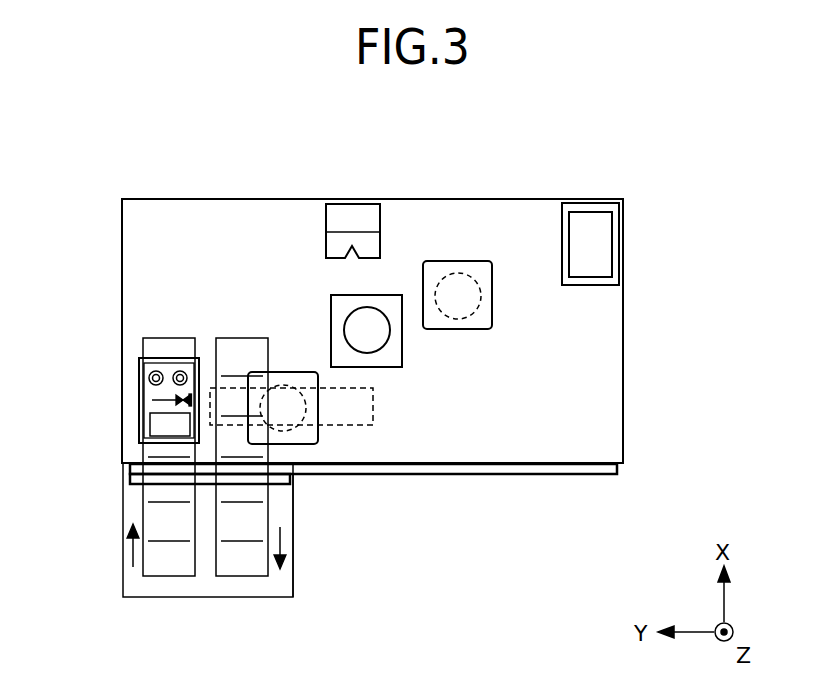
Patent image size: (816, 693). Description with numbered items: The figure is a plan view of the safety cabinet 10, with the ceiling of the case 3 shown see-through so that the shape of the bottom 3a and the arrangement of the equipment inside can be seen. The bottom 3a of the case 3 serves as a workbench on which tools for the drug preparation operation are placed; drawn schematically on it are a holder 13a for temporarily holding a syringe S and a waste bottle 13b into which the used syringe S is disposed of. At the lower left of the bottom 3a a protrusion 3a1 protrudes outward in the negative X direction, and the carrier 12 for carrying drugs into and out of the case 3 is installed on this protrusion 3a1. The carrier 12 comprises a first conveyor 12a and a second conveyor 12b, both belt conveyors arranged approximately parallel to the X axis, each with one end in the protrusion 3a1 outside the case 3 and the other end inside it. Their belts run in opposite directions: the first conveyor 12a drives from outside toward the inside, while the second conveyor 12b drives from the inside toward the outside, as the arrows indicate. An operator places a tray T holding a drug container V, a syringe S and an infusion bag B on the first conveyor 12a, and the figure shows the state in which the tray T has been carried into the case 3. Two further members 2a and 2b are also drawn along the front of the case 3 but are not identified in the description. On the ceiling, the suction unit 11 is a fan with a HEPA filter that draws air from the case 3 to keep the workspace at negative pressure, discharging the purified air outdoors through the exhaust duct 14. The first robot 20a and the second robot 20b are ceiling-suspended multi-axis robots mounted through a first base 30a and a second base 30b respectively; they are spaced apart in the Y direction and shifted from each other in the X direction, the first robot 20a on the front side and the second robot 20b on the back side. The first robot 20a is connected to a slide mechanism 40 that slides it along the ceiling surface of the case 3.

The safety cabinet 10 is at (268, 198).
The case 3 is at (624, 386).
The bottom 3a is at (563, 436).
The protrusion 3a1 is at (122, 528).
The conveyance rail 2a is at (590, 475).
The conveyance rail 2b is at (279, 486).
The carrier 12 is at (206, 512).
The first conveyor 12a is at (170, 577).
The second conveyor 12b is at (251, 491).
The tray T is at (138, 443).
The drug container V is at (180, 368).
The syringe S is at (152, 398).
The infusion bag B is at (157, 427).
The first base 30a is at (300, 444).
The first robot 20a is at (283, 385).
The slide mechanism 40 is at (373, 425).
The suction unit 11 is at (382, 368).
The exhaust duct 14 is at (390, 336).
The second base 30b is at (458, 261).
The second robot 20b is at (482, 296).
The holder 13a is at (352, 204).
The waste bottle 13b is at (590, 286).